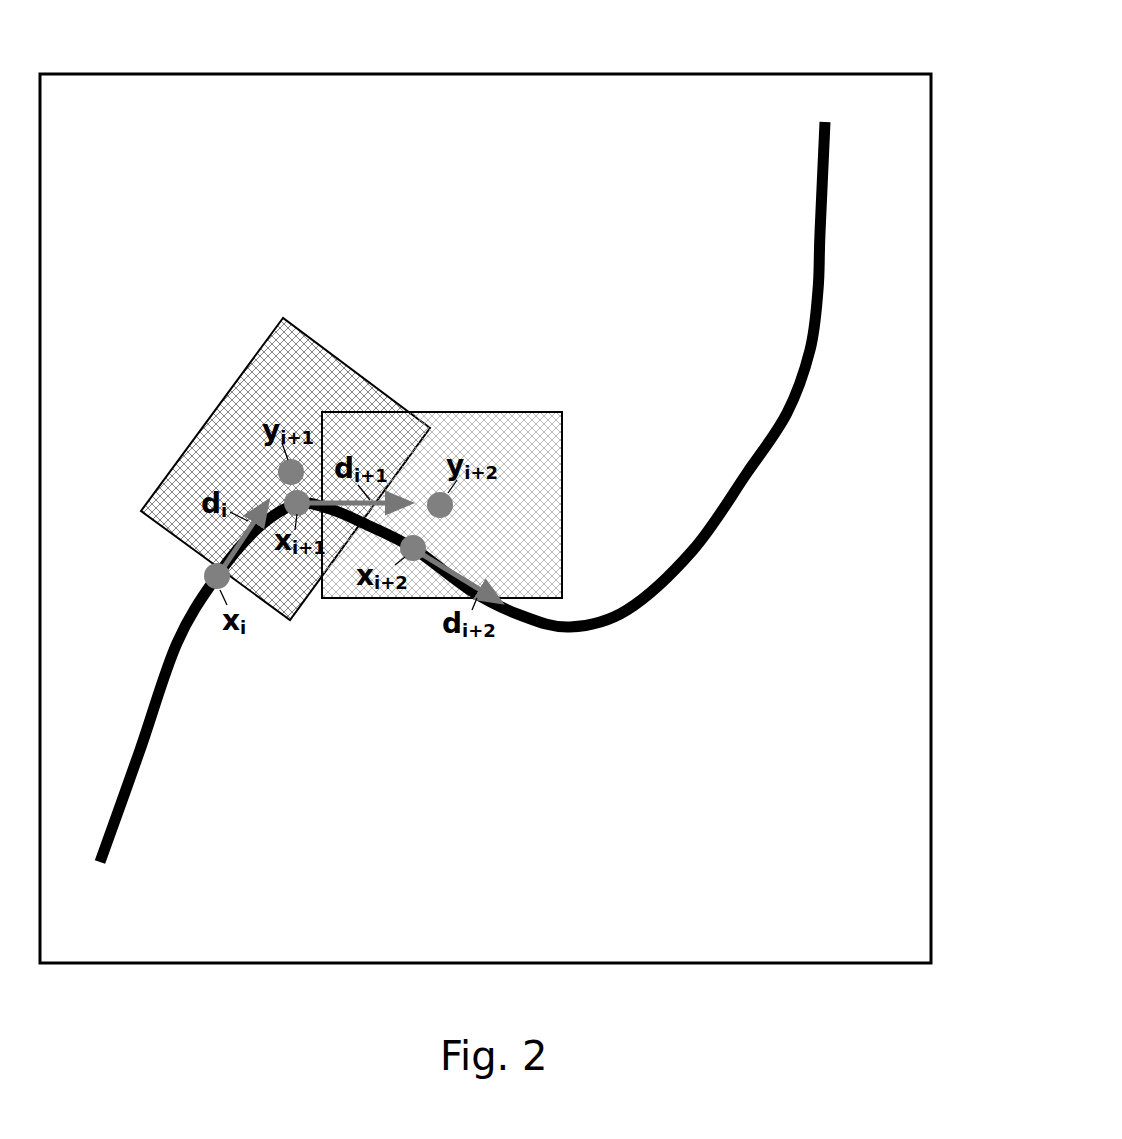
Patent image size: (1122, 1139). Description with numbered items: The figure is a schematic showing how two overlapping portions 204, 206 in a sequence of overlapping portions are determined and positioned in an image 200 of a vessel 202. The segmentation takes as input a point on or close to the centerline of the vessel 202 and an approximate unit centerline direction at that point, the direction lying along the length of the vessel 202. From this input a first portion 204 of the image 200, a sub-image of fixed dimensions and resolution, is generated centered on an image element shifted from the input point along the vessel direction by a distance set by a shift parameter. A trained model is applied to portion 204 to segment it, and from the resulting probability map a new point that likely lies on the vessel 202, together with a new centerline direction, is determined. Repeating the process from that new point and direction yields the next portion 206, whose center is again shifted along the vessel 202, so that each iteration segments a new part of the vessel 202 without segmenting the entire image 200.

The image 200 is at (728, 73).
The vessel 202 is at (818, 353).
The portion 204 is at (310, 337).
The portion 206 is at (565, 455).